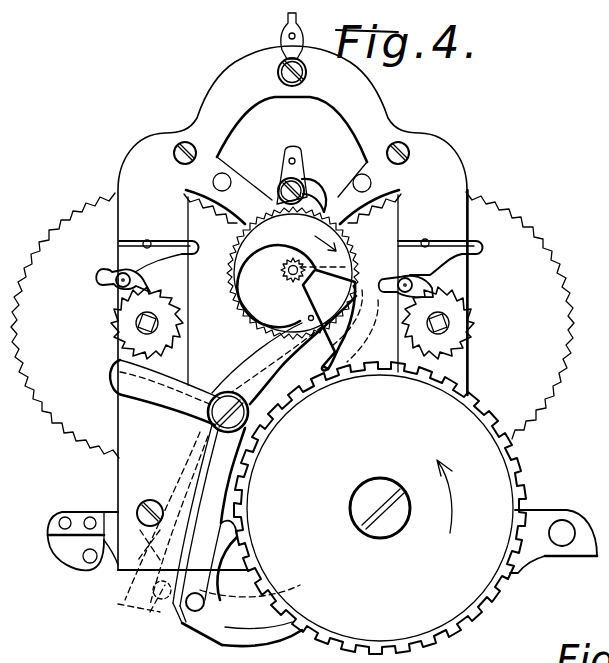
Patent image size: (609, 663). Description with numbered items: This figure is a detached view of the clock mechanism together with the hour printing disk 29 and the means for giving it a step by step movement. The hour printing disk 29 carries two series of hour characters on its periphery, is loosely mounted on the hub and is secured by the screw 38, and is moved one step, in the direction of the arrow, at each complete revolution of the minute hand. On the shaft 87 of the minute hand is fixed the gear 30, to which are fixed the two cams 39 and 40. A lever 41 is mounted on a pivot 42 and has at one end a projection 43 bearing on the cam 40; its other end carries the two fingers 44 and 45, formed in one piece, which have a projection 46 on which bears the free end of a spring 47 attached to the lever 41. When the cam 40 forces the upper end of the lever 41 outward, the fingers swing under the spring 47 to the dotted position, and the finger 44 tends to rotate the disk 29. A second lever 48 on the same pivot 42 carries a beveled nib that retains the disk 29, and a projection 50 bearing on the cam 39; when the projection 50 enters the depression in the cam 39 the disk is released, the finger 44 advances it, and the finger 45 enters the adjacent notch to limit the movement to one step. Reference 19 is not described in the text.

The hook end of lever 19 is at (307, 345).
The hour printing disk 29 is at (380, 508).
The gear 30 is at (322, 293).
The screw 38 is at (376, 480).
The cam 39 is at (293, 273).
The cam 40 is at (276, 286).
The lever 41 is at (240, 378).
The pivot 42 is at (284, 409).
The projection 43 is at (339, 318).
The finger 44 is at (270, 633).
The finger 45 is at (232, 529).
The projection 46 is at (180, 613).
The spring 47 is at (182, 500).
The lever 48 is at (363, 352).
The projection 50 is at (309, 316).
The shaft 87 is at (286, 269).